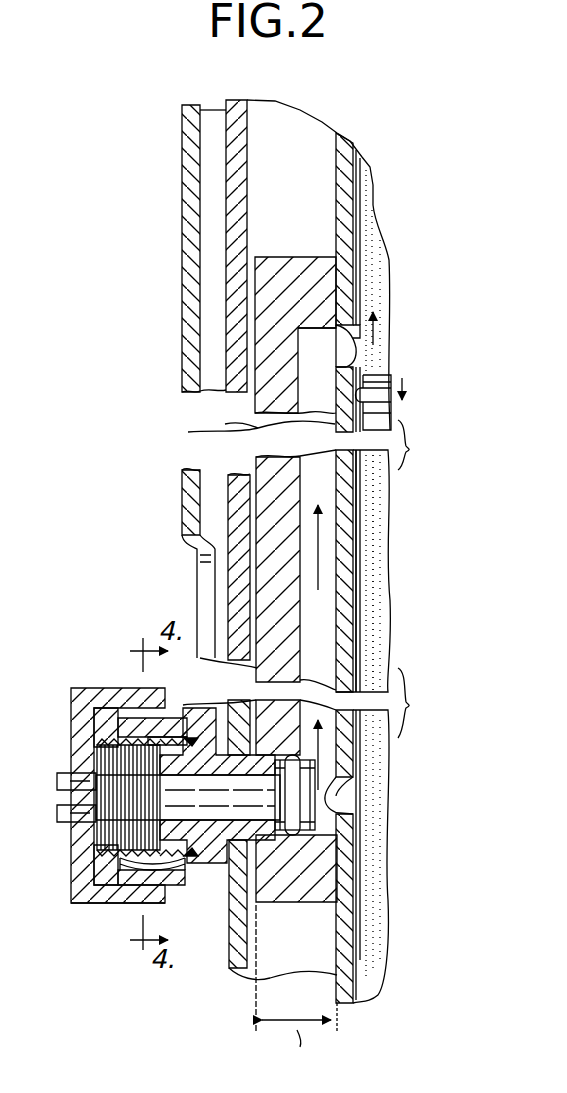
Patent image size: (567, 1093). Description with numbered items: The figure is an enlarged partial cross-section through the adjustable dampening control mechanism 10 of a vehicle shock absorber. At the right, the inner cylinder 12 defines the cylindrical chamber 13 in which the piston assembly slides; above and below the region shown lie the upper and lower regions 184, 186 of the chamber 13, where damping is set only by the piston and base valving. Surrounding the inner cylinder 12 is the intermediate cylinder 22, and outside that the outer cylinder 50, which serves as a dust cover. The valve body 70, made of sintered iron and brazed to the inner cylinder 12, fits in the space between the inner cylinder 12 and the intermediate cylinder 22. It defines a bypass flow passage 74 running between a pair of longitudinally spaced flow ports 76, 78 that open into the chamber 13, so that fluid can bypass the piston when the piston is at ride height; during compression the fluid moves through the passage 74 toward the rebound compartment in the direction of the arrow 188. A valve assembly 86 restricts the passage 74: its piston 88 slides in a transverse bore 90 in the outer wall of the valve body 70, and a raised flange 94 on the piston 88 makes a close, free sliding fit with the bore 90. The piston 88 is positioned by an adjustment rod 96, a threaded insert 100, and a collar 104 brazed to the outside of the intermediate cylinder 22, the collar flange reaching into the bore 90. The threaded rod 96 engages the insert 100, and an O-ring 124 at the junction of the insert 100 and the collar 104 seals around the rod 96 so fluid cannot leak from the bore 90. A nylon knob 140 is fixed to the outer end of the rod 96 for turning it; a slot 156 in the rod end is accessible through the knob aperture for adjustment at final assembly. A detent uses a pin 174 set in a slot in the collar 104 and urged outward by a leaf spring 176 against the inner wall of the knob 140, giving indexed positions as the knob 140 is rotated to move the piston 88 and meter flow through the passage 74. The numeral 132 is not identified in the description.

The adjustable dampening control mechanism 10 is at (118, 494).
The inner cylinder 12 is at (355, 1004).
The cylindrical chamber 13 is at (382, 612).
The intermediate cylinder 22 is at (228, 966).
The outer cylinder 50 is at (183, 300).
The valve body 70 is at (195, 432).
The bypass flow passage 74 is at (322, 483).
The flow port 76 is at (352, 357).
The flow port 78 is at (362, 800).
The valve assembly 86 is at (80, 910).
The piston 88 is at (265, 835).
The transverse bore 90 is at (300, 840).
The raised flange 94 is at (310, 850).
The adjustment rod 96 is at (72, 910).
The threaded insert 100 is at (128, 735).
The collar 104 is at (145, 735).
The O-ring 124 is at (210, 752).
The side wall 132 is at (22, 680).
The knob 140 is at (83, 727).
The slot 156 is at (62, 795).
The pin 174 is at (118, 882).
The spring 176 is at (125, 882).
The upper region 184 is at (22, 485).
The lower region 186 is at (115, 820).
The arrow 188 is at (318, 584).